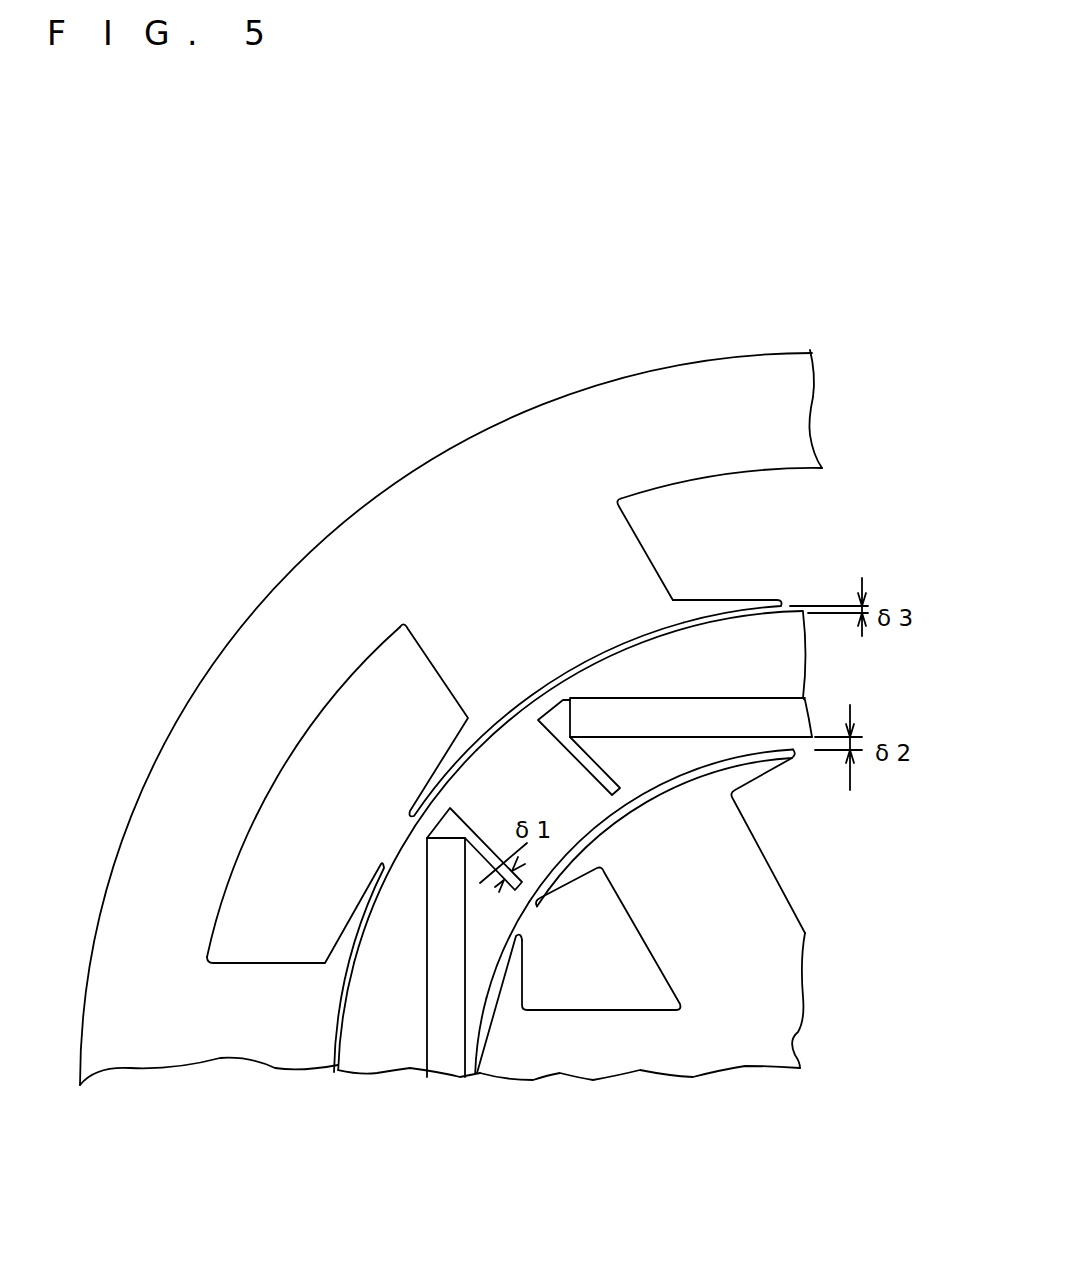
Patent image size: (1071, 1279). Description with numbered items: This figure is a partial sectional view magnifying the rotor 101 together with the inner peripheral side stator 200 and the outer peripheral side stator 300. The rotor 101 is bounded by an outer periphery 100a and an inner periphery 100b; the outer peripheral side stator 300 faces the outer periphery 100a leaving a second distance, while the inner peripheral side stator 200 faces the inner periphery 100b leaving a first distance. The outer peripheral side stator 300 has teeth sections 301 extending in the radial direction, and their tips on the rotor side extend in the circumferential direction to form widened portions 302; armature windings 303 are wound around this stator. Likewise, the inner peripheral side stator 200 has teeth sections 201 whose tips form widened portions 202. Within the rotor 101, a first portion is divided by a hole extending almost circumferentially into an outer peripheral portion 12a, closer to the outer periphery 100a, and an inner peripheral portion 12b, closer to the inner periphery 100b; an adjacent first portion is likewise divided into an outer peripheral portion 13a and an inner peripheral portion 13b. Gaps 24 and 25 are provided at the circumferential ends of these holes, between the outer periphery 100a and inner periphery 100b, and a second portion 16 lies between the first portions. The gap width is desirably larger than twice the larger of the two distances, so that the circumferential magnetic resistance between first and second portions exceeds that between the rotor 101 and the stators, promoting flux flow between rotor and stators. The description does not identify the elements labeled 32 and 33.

The outer peripheral side stator 300 is at (495, 717).
The teeth sections 301 is at (620, 517).
The widened portions 302 is at (750, 607).
The armature windings 303 is at (797, 410).
The inner peripheral side stator 200 is at (673, 966).
The teeth sections 201 is at (690, 900).
The widened portions 202 is at (745, 773).
The outer peripheral portion 12a is at (783, 670).
The inner peripheral portion 12b is at (700, 747).
The outer peripheral portion 13a is at (377, 1053).
The inner peripheral portion 13b is at (487, 933).
The first permanent magnet 32 is at (790, 710).
The second permanent magnet 33 is at (443, 1063).
The gap 24 is at (552, 720).
The gap 25 is at (443, 830).
The second portion 16 is at (590, 800).
The outer periphery 100a is at (340, 1035).
The inner periphery 100b is at (520, 908).
The rotor 101 is at (349, 1091).